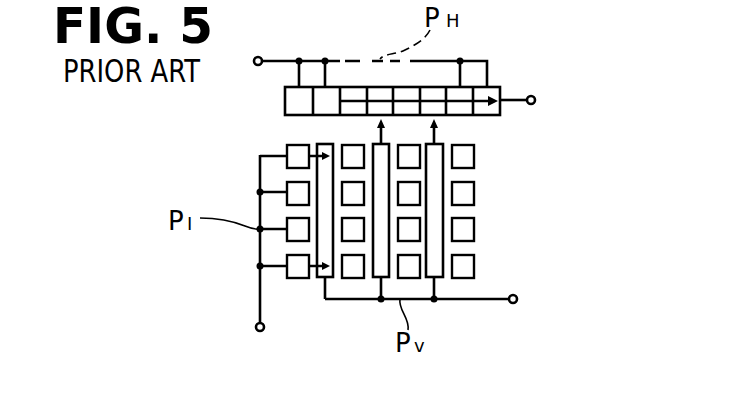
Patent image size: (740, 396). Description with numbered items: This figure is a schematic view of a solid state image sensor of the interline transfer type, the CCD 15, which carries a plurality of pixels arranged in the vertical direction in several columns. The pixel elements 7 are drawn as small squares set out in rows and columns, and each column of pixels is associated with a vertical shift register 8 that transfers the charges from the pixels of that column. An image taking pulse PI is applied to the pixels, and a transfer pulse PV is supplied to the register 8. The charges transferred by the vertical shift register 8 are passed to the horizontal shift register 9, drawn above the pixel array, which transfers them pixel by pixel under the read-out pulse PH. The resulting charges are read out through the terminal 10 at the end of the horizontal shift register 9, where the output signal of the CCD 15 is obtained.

The photosensitive elements (squares) 7 is at (298, 280).
The vertical shift register 8 is at (437, 248).
The horizontal shift register 9 is at (490, 86).
The terminal 10 is at (535, 100).
The CCD 15 is at (205, 157).